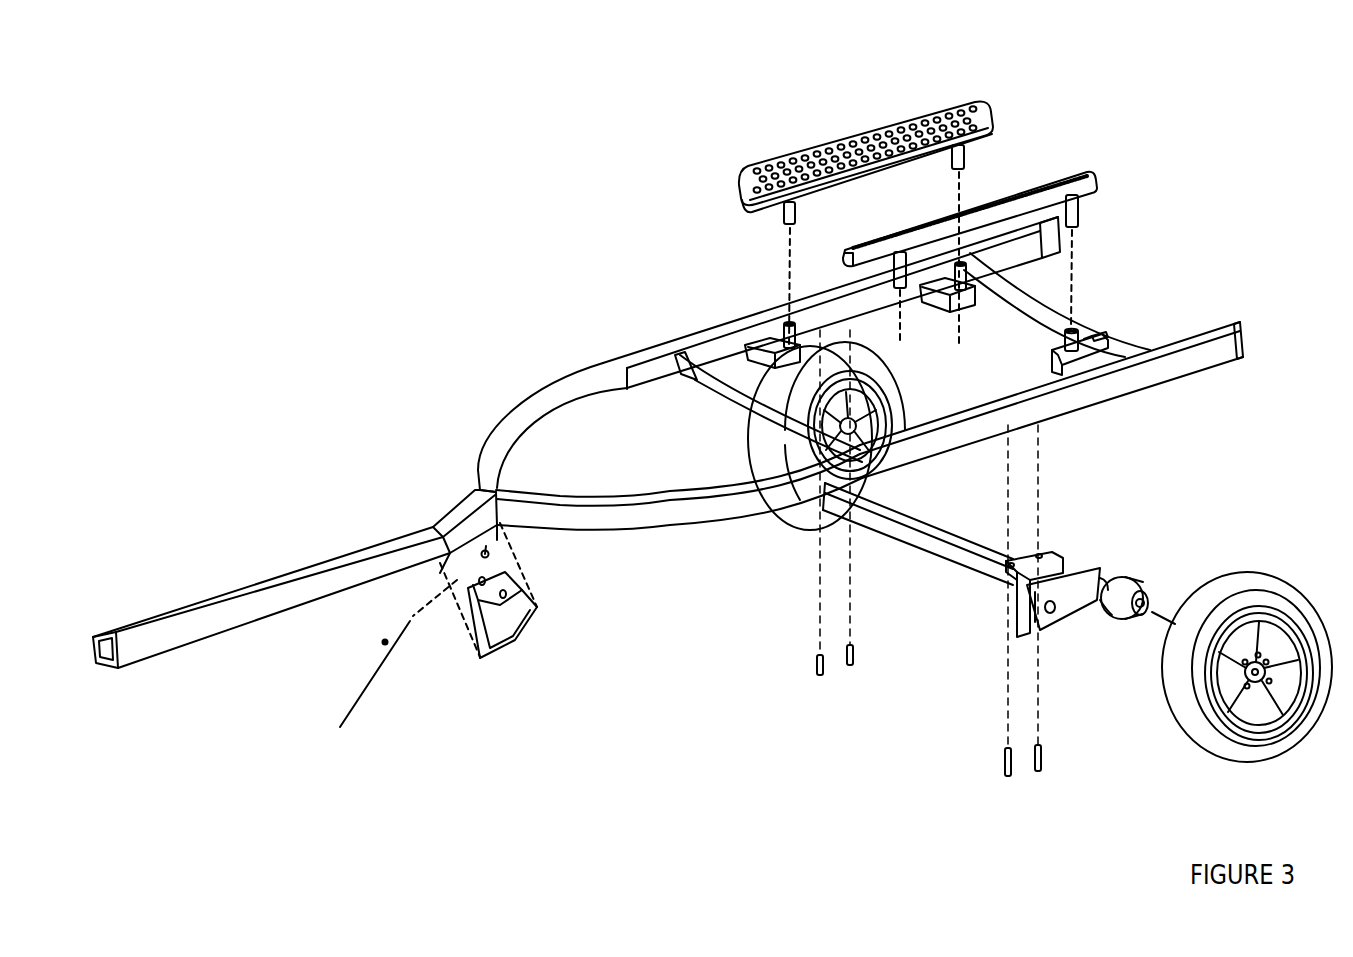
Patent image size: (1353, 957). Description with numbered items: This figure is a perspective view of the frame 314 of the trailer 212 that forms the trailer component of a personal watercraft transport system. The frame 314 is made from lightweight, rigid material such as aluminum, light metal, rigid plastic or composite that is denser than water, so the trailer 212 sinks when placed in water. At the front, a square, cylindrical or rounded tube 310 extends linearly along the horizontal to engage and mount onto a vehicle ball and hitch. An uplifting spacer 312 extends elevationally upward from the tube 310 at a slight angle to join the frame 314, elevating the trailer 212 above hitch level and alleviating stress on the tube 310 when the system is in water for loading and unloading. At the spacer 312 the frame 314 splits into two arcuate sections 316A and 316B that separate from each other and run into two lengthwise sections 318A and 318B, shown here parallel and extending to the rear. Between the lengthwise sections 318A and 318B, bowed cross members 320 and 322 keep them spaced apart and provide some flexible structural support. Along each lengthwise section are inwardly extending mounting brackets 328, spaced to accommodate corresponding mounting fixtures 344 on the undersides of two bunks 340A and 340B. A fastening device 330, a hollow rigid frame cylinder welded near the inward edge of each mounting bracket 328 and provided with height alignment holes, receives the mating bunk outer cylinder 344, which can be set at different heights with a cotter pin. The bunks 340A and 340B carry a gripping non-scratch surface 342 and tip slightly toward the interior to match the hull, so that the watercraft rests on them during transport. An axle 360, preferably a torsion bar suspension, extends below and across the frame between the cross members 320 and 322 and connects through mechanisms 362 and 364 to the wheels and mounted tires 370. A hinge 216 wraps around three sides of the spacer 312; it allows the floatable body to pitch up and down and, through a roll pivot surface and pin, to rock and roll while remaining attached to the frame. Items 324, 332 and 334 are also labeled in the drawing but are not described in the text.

The trailer 212 is at (337, 370).
The tube 310 is at (121, 630).
The uplifting spacer 312 is at (448, 511).
The frame 314 is at (603, 532).
The arcuate section 316A is at (565, 372).
The arcuate section 316B is at (679, 564).
The lengthwise section 318A is at (715, 325).
The lengthwise section 318B is at (1150, 392).
The bowed cross member 320 is at (698, 390).
The bowed cross member 322 is at (1035, 298).
The frame apex joint 324 is at (505, 405).
The mounting bracket 328 is at (968, 308).
The fastening device 330 is at (1082, 330).
The fastener 332 is at (1110, 326).
The pad post 334 is at (1083, 210).
The bunk 340A is at (983, 107).
The bunk 340B is at (1100, 170).
The gripping non-scratch surface 342 is at (872, 126).
The mounting fixture 344 is at (968, 160).
The axle 360 is at (944, 572).
The mechanism 362 is at (1060, 553).
The mechanism 364 is at (1132, 577).
The wheels and mounted tires 370 is at (762, 454).
The hinge 216 is at (513, 657).